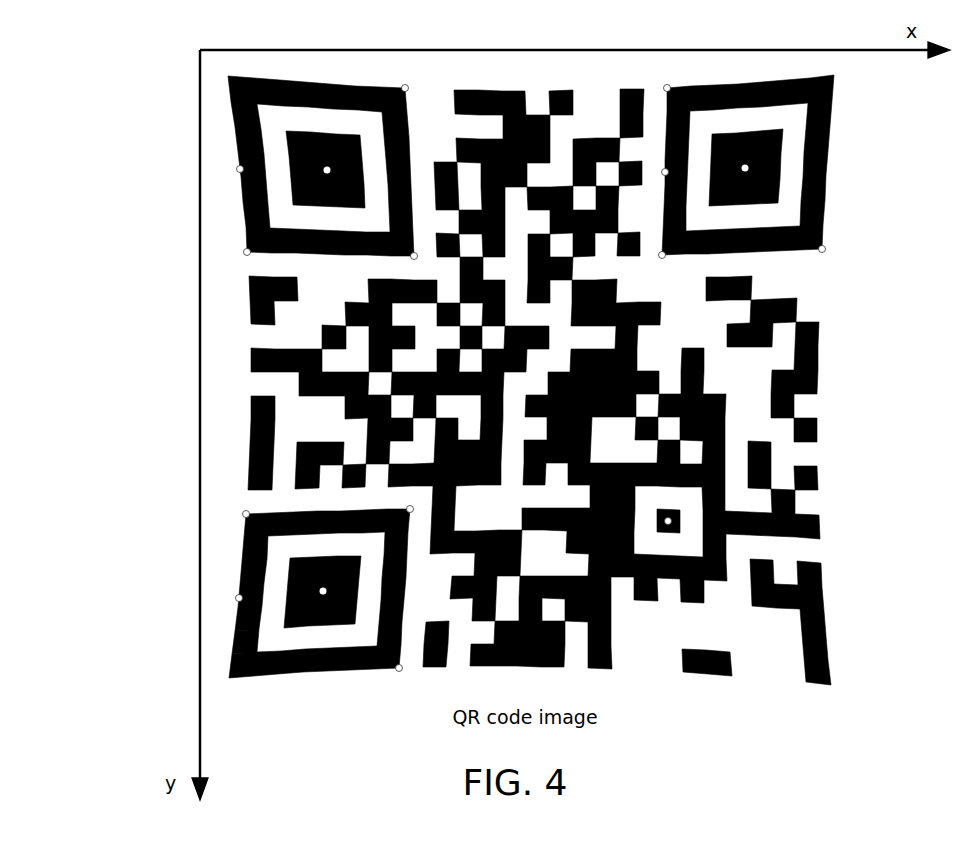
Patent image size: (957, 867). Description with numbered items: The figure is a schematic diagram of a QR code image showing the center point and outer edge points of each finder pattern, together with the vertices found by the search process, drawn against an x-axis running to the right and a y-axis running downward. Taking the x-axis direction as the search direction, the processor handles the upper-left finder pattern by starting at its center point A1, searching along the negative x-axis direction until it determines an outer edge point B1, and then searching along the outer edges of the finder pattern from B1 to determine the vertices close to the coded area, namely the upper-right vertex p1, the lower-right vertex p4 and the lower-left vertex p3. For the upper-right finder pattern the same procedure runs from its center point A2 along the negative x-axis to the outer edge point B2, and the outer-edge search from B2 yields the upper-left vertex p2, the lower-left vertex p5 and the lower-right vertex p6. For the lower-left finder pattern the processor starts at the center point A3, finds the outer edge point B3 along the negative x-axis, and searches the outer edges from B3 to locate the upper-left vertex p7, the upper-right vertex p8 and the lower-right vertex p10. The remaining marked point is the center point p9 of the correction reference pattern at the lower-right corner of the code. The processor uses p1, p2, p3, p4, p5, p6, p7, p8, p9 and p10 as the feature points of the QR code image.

The upper-right vertex of the upper-left finder pattern p1 is at (416, 83).
The upper-left vertex of the upper-right finder pattern p2 is at (659, 79).
The lower-left vertex of the upper-left finder pattern p3 is at (235, 261).
The lower-right vertex of the upper-left finder pattern p4 is at (425, 267).
The lower-left vertex of the upper-right finder pattern p5 is at (674, 267).
The lower-right vertex of the upper-right finder pattern p6 is at (824, 260).
The upper-left vertex of the lower-left finder pattern p7 is at (244, 503).
The upper-right vertex of the lower-left finder pattern p8 is at (415, 500).
The center point of the correction reference pattern p9 is at (682, 507).
The lower-right vertex of the lower-left finder pattern p10 is at (402, 677).
The center point of the upper-left finder pattern A1 is at (341, 183).
The center point of the upper-right finder pattern A2 is at (758, 183).
The center point of the lower-left finder pattern A3 is at (339, 604).
The outer edge point of the upper-left finder pattern B1 is at (226, 175).
The outer edge point of the upper-right finder pattern B2 is at (652, 160).
The outer edge point of the lower-left finder pattern B3 is at (228, 600).